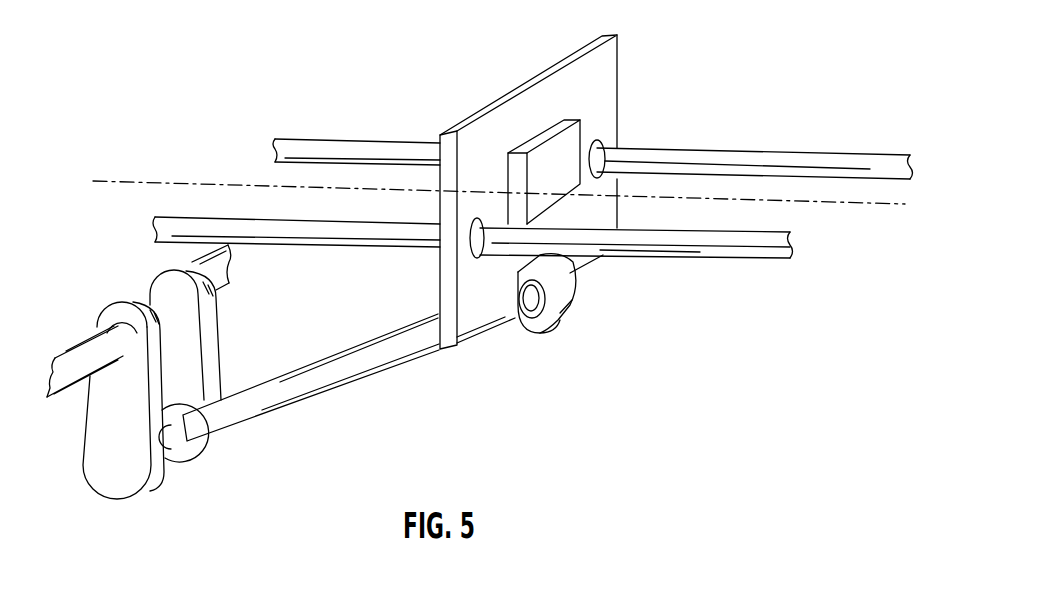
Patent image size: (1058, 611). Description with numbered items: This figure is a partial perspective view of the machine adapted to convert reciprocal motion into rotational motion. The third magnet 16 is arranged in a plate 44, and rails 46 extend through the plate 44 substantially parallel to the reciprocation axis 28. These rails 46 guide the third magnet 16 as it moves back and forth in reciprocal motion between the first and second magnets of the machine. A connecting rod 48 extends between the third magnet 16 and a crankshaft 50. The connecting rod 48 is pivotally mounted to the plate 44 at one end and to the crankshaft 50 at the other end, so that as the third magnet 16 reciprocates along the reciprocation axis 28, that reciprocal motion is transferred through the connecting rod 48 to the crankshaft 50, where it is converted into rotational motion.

The third magnet 16 is at (572, 142).
The reciprocation axis 28 is at (168, 182).
The plate 44 is at (528, 103).
The rails 46 is at (352, 148).
The connecting rod 48 is at (352, 373).
The crankshaft 50 is at (95, 413).